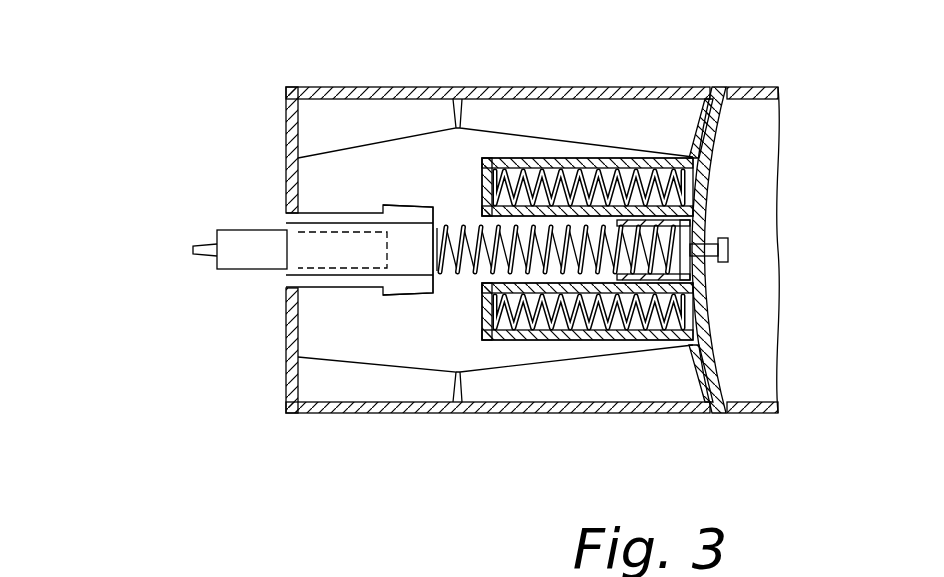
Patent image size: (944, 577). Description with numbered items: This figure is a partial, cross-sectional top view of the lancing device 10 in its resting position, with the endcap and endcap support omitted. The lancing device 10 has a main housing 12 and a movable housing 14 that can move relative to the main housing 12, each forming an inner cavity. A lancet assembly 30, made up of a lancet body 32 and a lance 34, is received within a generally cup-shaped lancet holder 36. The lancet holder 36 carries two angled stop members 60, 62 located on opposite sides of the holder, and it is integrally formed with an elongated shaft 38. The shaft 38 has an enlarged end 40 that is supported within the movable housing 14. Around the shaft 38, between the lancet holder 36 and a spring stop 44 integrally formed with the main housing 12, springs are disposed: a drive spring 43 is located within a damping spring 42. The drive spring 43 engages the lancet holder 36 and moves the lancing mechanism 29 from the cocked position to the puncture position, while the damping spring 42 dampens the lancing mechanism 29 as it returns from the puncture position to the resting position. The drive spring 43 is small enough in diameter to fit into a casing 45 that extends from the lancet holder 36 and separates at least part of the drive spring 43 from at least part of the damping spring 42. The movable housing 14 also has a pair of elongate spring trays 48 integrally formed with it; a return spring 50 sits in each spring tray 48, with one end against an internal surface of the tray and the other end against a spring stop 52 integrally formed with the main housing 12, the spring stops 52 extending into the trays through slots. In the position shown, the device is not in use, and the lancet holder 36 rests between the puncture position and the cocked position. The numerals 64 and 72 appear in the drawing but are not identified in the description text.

The lancing device 10 is at (139, 73).
The main housing 12 is at (527, 72).
The movable housing 14 is at (753, 72).
The lancing mechanism 29 is at (440, 186).
The lancet assembly 30 is at (218, 287).
The lancet body 32 is at (237, 229).
The lance 34 is at (193, 249).
The lancet holder 36 is at (273, 288).
The shaft 38 is at (713, 248).
The enlarged end 40 is at (728, 250).
The damping spring 42 is at (454, 272).
The drive spring 43 is at (548, 270).
The spring stop 44 is at (673, 278).
The casing 45 is at (455, 228).
The spring trays 48 is at (563, 158).
The return spring 50 is at (636, 170).
The spring stop 52 is at (707, 182).
The angled stop member 60 is at (359, 250).
The angled stop member 62 is at (404, 287).
The upper membrane 64 is at (303, 178).
The lower membrane 72 is at (305, 320).